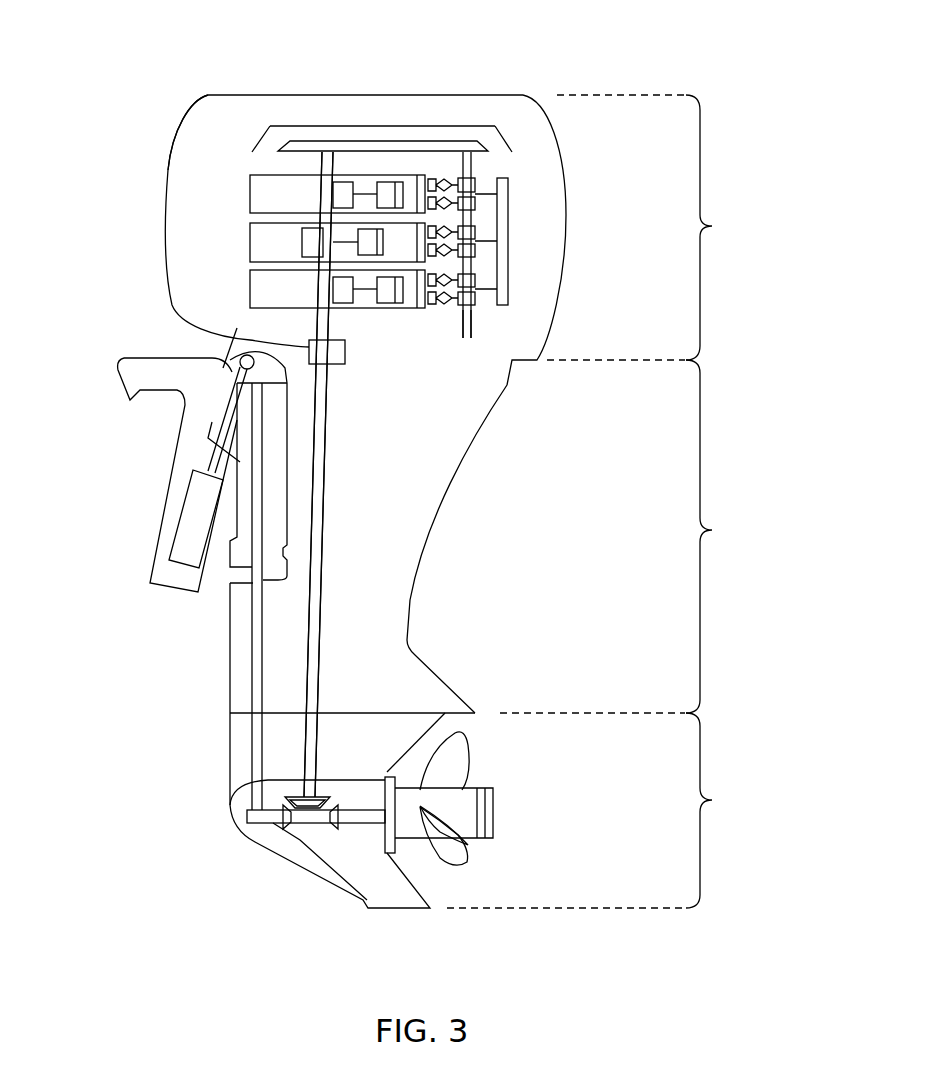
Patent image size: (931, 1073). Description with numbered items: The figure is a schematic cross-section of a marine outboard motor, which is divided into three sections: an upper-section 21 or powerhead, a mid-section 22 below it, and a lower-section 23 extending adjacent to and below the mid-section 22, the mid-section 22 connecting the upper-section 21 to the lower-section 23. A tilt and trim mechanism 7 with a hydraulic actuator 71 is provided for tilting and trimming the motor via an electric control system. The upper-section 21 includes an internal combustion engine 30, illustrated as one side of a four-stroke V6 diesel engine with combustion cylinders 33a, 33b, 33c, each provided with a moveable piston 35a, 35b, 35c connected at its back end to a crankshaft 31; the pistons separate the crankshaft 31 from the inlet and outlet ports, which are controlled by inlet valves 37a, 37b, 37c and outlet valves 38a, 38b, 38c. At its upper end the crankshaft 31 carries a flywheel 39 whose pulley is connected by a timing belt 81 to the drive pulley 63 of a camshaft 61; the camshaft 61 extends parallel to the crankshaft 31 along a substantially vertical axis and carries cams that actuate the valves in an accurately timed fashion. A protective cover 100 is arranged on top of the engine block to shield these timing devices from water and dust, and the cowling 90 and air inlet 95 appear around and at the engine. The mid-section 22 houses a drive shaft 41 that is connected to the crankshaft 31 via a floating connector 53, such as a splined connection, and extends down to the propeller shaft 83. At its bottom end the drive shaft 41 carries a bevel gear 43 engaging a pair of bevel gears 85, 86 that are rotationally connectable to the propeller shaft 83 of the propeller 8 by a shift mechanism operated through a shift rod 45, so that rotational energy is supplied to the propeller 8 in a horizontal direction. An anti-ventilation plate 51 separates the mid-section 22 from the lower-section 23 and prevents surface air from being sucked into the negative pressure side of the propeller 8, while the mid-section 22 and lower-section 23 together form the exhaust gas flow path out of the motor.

The tilt and trim mechanism 7 is at (166, 468).
The propeller 8 is at (460, 815).
The upper-section 21 is at (712, 226).
The mid-section 22 is at (712, 530).
The lower-section 23 is at (712, 800).
The internal combustion engine 30 is at (391, 120).
The crankshaft 31 is at (280, 127).
The combustion cylinder 33a is at (250, 185).
The combustion cylinder 33b is at (250, 235).
The combustion cylinder 33c is at (250, 282).
The piston 35a is at (438, 182).
The piston 35b is at (452, 250).
The piston 35c is at (380, 310).
The inlet valve 37a is at (478, 180).
The inlet valve 37b is at (478, 232).
The inlet valve 37c is at (478, 280).
The outlet valve 38a is at (478, 200).
The outlet valve 38b is at (478, 250).
The outlet valve 38c is at (478, 298).
The flywheel 39 is at (325, 160).
The drive shaft 41 is at (318, 522).
The bevel gear 43 is at (307, 798).
The shift rod 45 is at (250, 640).
The anti-ventilation plate 51 is at (270, 712).
The floating connector 53 is at (310, 348).
The camshaft 61 is at (480, 335).
The drive pulley 63 is at (495, 150).
The hydraulic actuator 71 is at (190, 527).
The timing belt 81 is at (390, 190).
The propeller shaft 83 is at (348, 820).
The bevel gear 85 is at (285, 826).
The bevel gear 86 is at (333, 808).
The engine cover 90 is at (186, 122).
The exhaust manifold 95 is at (505, 208).
The protective cover 100 is at (303, 127).